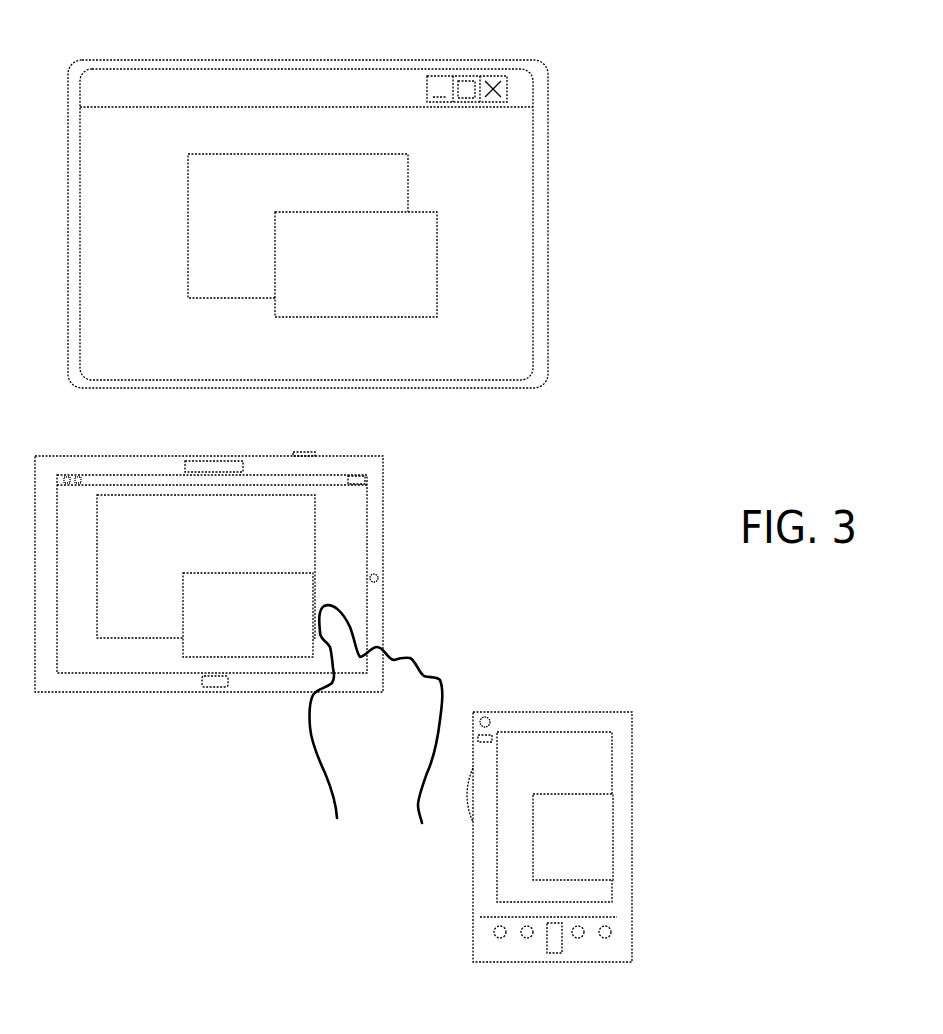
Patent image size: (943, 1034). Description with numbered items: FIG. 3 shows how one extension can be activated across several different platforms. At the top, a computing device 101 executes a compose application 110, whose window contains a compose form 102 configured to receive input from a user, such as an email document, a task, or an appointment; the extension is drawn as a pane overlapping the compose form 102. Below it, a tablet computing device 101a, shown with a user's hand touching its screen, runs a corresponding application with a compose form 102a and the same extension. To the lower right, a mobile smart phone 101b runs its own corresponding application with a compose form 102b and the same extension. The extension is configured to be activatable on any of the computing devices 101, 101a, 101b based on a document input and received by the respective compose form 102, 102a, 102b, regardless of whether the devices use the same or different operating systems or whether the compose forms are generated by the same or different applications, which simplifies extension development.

The computing device 101 is at (330, 197).
The tablet computing device 101a is at (243, 559).
The mobile phone 101b is at (571, 826).
The compose application 110 is at (306, 224).
The compose form 102 is at (282, 201).
The compose form 102a is at (185, 541).
The compose form 102b is at (532, 778).